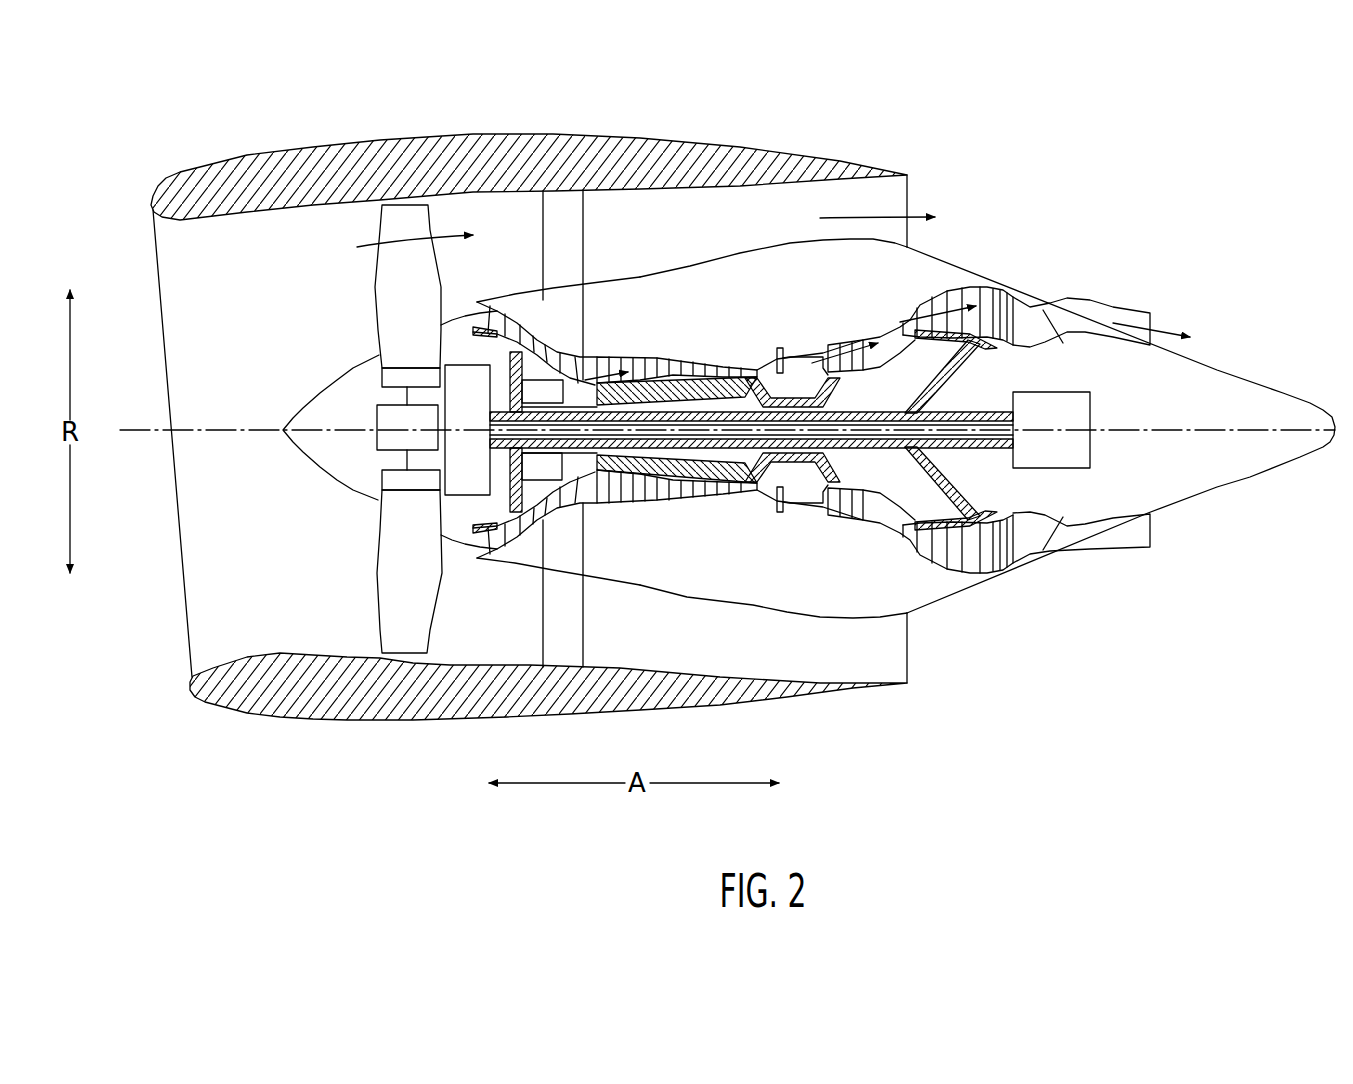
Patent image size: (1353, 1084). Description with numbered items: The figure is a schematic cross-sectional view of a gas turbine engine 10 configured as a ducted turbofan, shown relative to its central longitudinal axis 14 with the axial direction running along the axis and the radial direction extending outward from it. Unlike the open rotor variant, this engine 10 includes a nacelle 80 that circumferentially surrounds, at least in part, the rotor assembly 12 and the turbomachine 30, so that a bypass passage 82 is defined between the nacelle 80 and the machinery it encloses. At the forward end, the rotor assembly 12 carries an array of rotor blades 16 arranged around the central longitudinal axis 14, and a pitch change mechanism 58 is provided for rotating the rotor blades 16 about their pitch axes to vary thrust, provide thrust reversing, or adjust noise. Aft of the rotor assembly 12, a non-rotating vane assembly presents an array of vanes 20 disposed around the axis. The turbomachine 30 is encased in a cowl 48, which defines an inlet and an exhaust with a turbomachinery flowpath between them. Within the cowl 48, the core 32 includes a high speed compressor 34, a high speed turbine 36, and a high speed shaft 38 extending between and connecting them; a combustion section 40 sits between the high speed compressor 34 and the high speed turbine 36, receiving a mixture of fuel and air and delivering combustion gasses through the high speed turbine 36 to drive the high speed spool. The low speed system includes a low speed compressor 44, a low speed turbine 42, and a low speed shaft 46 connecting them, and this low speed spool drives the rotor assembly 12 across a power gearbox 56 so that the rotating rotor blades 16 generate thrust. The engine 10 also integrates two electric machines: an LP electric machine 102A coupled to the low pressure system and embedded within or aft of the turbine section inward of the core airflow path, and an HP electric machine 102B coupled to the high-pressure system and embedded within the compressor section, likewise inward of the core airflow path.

The gas turbine engine 10 is at (1063, 142).
The rotor assembly 12 is at (334, 224).
The central longitudinal axis 14 is at (1250, 428).
The rotor blades 16 is at (376, 292).
The vanes 20 is at (588, 223).
The turbomachine 30 is at (770, 215).
The core 32 is at (830, 573).
The high speed compressor 34 is at (614, 505).
The high speed turbine 36 is at (843, 339).
The high speed shaft 38 is at (800, 393).
The combustion section 40 is at (797, 500).
The low speed turbine 42 is at (997, 577).
The low speed compressor 44 is at (516, 563).
The low speed shaft 46 is at (694, 449).
The cowl 48 is at (753, 606).
The power gearbox 56 is at (452, 364).
The pitch change mechanism 58 is at (377, 413).
The nacelle 80 is at (421, 717).
The bypass passage 82 is at (684, 650).
The LP electric machine 102A is at (1073, 413).
The HP electric machine 102B is at (550, 388).